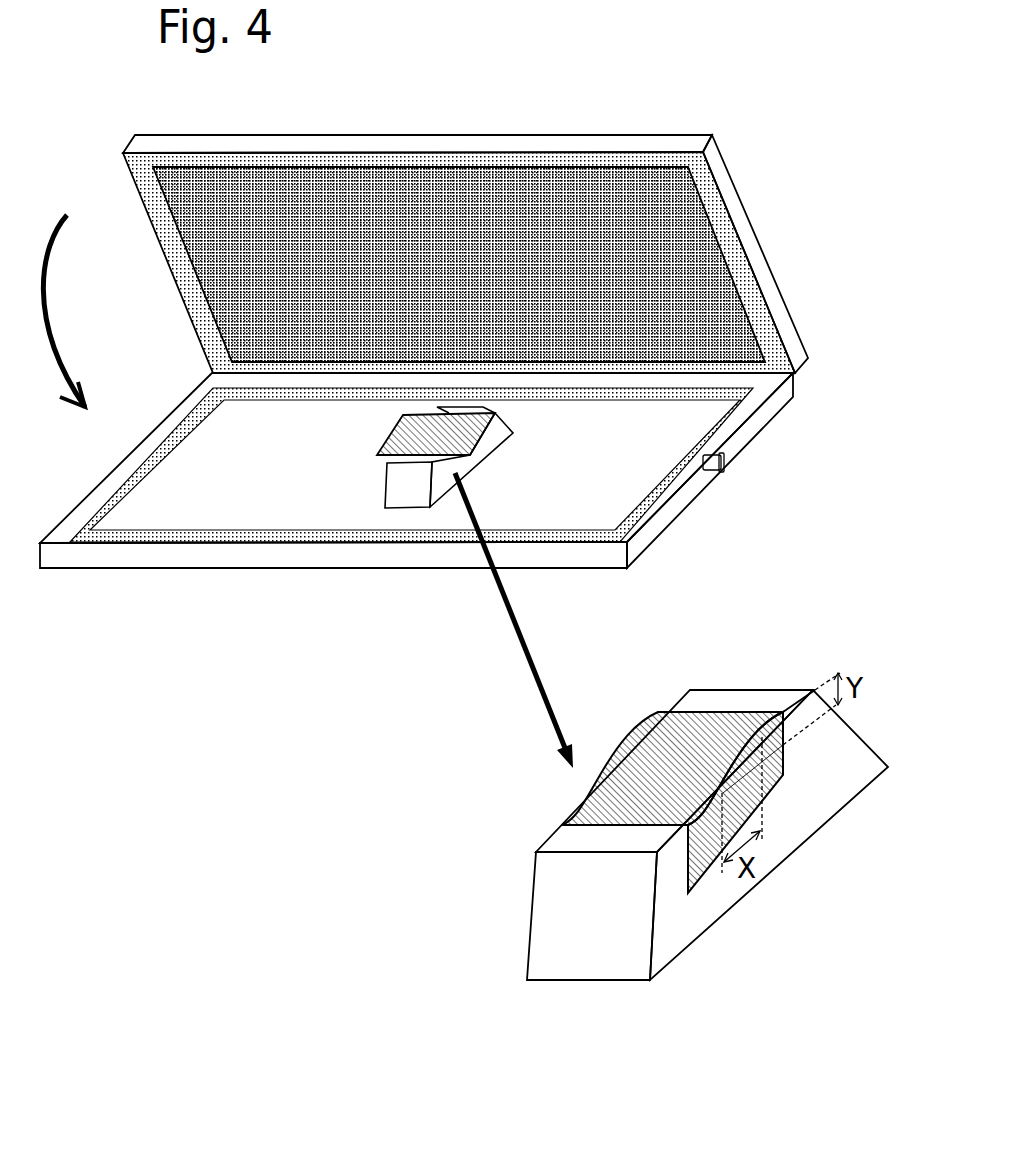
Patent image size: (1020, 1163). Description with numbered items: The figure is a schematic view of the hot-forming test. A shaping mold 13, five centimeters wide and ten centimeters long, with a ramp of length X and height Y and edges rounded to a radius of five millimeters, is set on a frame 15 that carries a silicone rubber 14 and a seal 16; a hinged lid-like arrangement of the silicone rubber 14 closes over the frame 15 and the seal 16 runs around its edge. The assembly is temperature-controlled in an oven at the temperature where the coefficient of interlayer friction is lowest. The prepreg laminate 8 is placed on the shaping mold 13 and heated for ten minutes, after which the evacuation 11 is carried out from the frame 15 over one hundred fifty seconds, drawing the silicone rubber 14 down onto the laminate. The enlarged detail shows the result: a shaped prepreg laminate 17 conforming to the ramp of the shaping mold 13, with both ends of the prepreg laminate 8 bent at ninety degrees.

The prepreg laminate 8 is at (458, 422).
The evacuation 11 is at (725, 463).
The shaping mold 13 is at (417, 478).
The silicone rubber 14 is at (635, 253).
The frame 15 is at (153, 557).
The seal 16 is at (278, 540).
The shaped prepreg laminate 17 is at (652, 760).